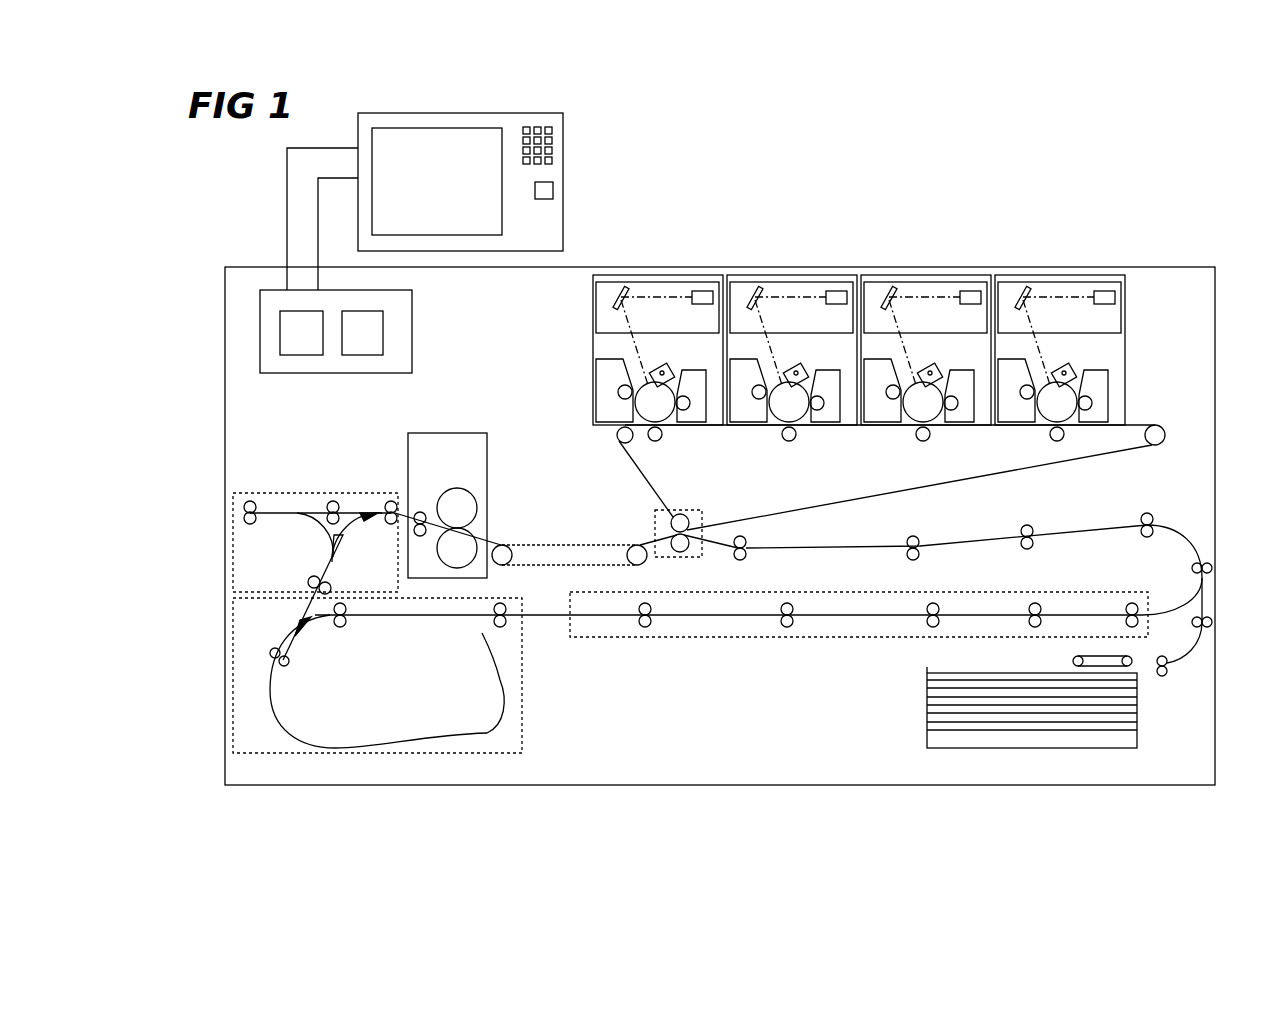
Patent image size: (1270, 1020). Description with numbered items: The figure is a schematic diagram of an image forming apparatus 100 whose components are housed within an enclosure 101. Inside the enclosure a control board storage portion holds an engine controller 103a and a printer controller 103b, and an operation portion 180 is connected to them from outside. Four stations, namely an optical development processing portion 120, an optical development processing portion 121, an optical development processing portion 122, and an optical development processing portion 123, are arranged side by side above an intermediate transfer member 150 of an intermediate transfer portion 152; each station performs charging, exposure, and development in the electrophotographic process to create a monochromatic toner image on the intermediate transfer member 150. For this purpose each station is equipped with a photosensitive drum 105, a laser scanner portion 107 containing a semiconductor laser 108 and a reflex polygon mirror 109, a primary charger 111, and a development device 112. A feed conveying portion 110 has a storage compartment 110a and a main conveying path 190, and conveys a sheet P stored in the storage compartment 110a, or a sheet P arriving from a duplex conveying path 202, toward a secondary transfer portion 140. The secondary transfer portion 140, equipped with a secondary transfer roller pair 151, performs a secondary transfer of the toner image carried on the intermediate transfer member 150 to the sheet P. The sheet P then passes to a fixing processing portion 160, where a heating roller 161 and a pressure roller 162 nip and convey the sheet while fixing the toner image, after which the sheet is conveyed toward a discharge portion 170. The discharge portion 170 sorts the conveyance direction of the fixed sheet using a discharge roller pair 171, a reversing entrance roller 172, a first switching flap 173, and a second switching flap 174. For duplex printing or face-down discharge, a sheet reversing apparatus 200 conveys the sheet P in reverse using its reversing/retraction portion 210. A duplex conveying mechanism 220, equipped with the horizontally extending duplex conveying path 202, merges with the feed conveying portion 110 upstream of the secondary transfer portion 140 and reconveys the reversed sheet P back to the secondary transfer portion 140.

The image forming apparatus 100 is at (709, 166).
The enclosure 101 is at (1168, 265).
The engine controller 103a is at (300, 355).
The printer controller 103b is at (368, 373).
The photosensitive drum 105 is at (665, 415).
The laser scanner portion 107 is at (673, 282).
The semiconductor laser 108 is at (696, 305).
The reflex polygon mirror 109 is at (614, 296).
The feed conveying portion 110 is at (1172, 520).
The storage compartment 110a is at (1137, 705).
The primary charger 111 is at (667, 368).
The development device 112 is at (607, 413).
The optical development processing portion 120 is at (640, 273).
The optical development processing portion 121 is at (774, 273).
The optical development processing portion 122 is at (908, 273).
The optical development processing portion 123 is at (1043, 273).
The secondary transfer portion 140 is at (655, 531).
The intermediate transfer member 150 is at (638, 484).
The secondary transfer roller pair 151 is at (684, 553).
The intermediate transfer portion 152 is at (924, 492).
The fixing processing portion 160 is at (462, 433).
The heating roller 161 is at (470, 483).
The pressure roller 162 is at (470, 570).
The discharge portion 170 is at (293, 493).
The discharge roller pair 171 is at (250, 502).
The reversing entrance roller 172 is at (316, 578).
The first switching flap 173 is at (333, 502).
The second switching flap 174 is at (342, 547).
The operation portion 180 is at (563, 138).
The main conveying path 190 is at (820, 550).
The sheet reversing apparatus 200 is at (522, 690).
The duplex conveying path 202 is at (422, 617).
The reversing/retraction portion 210 is at (465, 717).
The duplex conveying mechanism 220 is at (815, 640).
The sheet P is at (1007, 673).